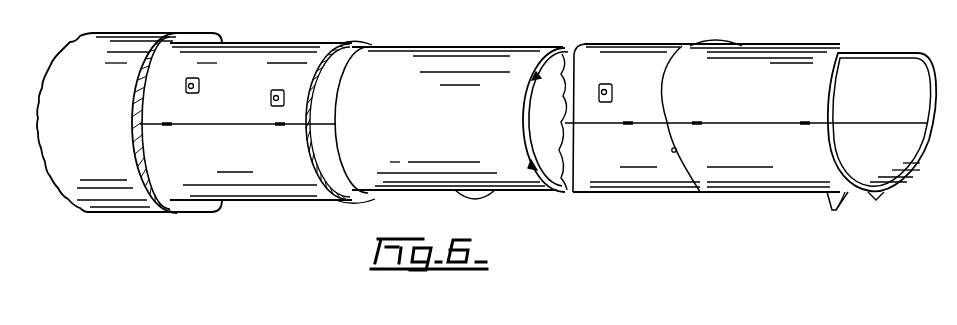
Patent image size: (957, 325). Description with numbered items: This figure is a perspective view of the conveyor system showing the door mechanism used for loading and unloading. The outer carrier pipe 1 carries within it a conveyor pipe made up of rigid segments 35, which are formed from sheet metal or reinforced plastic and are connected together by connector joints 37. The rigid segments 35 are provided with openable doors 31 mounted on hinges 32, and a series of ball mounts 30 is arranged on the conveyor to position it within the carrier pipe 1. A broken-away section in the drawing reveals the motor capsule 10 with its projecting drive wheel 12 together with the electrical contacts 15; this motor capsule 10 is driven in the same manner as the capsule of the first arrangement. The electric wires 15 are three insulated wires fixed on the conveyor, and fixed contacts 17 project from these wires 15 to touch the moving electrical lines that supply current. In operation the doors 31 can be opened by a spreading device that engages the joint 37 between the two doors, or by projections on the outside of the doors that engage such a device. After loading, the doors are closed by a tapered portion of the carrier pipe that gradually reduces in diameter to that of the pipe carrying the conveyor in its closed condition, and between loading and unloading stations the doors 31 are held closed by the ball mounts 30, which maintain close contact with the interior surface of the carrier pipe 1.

The carrier pipe 1 is at (122, 46).
The motor capsule 10 is at (462, 50).
The drive wheel 12 is at (478, 194).
The electric wires 15 is at (878, 195).
The fixed contacts 17 is at (829, 210).
The ball mounts 30 is at (272, 92).
The openable doors 31 is at (852, 50).
The hinges 32 is at (804, 122).
The rigid segments 35 is at (256, 190).
The connector joints 37 is at (357, 44).